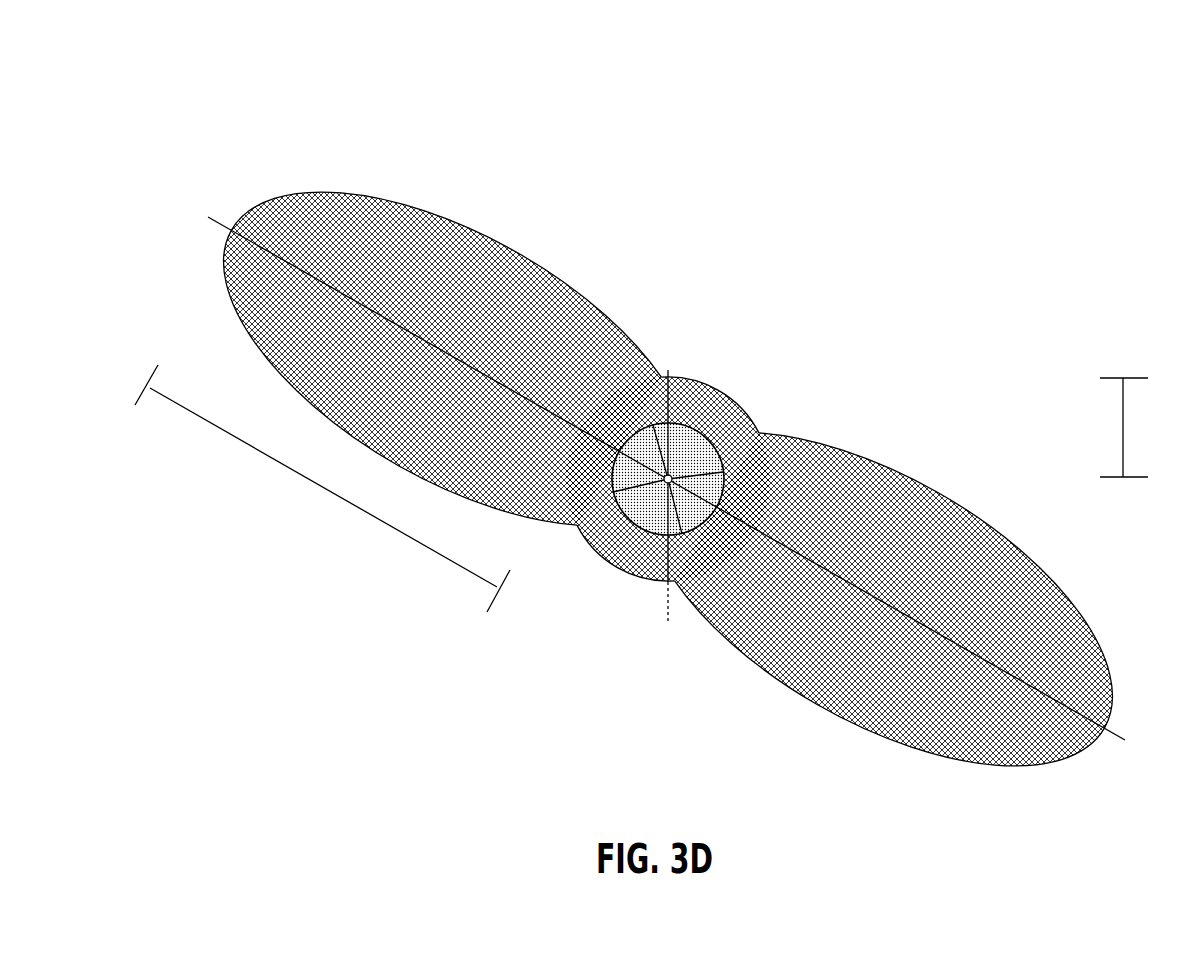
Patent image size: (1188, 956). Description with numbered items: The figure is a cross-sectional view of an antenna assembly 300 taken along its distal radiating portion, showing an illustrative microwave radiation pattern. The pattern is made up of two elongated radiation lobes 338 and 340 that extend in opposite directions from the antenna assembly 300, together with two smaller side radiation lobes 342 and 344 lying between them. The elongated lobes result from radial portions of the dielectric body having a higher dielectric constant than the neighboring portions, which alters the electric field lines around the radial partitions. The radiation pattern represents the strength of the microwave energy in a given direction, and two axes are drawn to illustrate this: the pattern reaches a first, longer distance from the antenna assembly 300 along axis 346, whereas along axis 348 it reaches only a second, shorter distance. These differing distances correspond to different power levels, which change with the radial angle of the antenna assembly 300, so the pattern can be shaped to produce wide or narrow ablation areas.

The antenna assembly 300 is at (654, 406).
The elongated radiation lobe 338 is at (1107, 728).
The elongated radiation lobe 340 is at (255, 208).
The side radiation lobe 342 is at (807, 381).
The side radiation lobe 344 is at (673, 582).
The axis 346 is at (223, 223).
The axis 348 is at (668, 622).